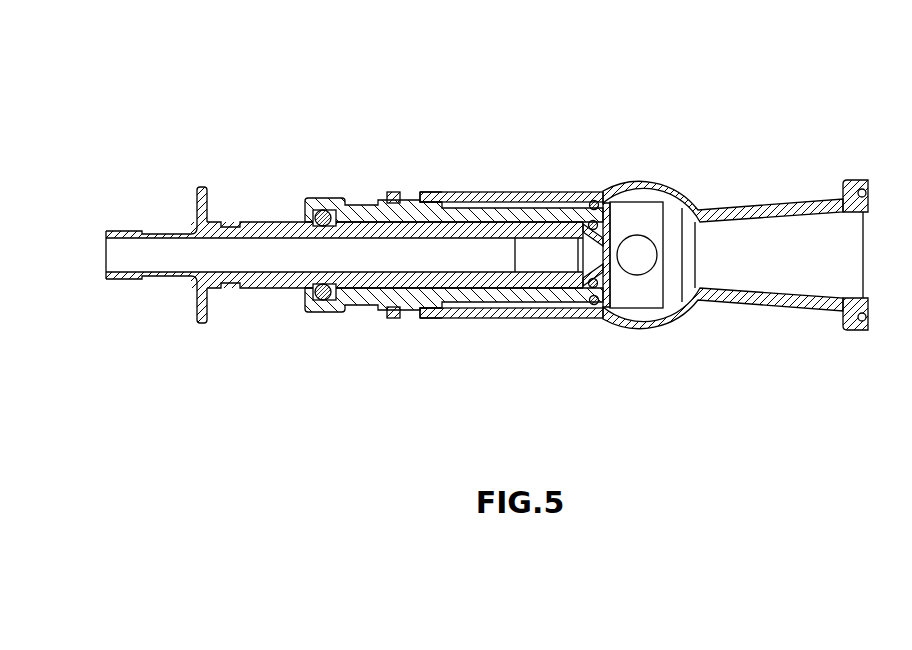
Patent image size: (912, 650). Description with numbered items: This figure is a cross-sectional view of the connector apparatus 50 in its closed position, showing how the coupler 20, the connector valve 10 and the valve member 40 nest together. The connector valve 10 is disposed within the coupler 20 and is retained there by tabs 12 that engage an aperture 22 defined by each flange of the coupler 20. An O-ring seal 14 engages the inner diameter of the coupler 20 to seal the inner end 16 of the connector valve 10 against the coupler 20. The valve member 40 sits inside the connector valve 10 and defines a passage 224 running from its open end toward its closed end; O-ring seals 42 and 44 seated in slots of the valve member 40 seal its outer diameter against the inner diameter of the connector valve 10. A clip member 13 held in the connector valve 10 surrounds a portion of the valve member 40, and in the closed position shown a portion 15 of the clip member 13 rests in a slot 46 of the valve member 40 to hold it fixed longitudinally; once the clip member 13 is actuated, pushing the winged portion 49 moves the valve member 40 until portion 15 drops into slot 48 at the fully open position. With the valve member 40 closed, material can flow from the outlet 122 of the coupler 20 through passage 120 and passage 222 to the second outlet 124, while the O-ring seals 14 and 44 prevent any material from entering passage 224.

The connector apparatus 50 is at (483, 67).
The connector valve 10 is at (378, 203).
The tabs 12 is at (403, 199).
The clip member 13 is at (322, 299).
The O-ring seal 14 is at (595, 305).
The portion of the clip member 15 is at (323, 212).
The end of the connector valve 16 is at (604, 207).
The coupler 20 is at (490, 193).
The aperture 22 is at (418, 200).
The valve member 40 is at (253, 288).
The O-ring seal 42 is at (498, 288).
The O-ring seal 44 is at (590, 212).
The slot 46 is at (316, 230).
The slot 48 is at (232, 226).
The winged portion 49 is at (201, 186).
The passage 120 is at (640, 243).
The outlet 122 is at (645, 328).
The second outlet 124 is at (860, 182).
The passage 222 is at (745, 267).
The passage 224 is at (248, 266).